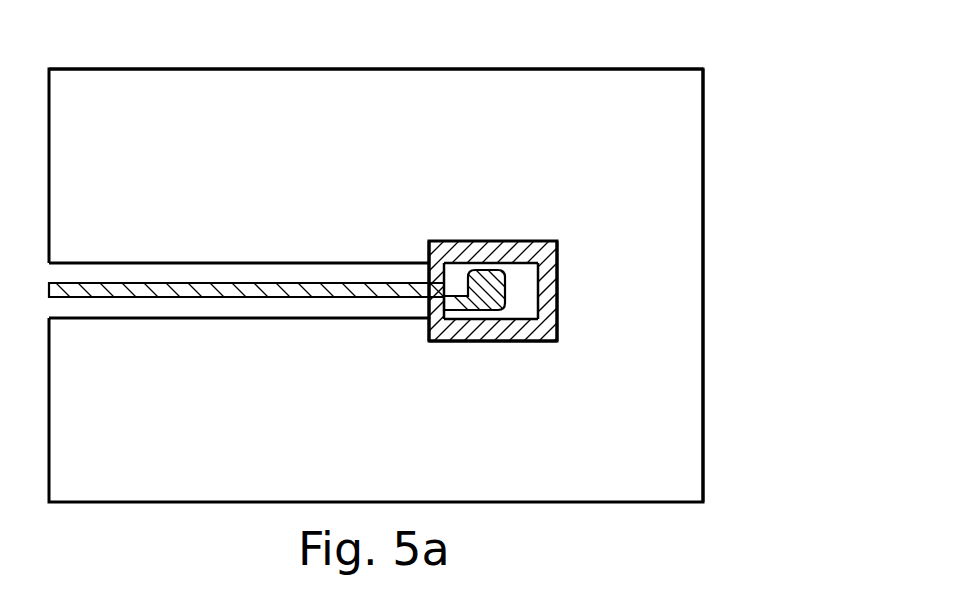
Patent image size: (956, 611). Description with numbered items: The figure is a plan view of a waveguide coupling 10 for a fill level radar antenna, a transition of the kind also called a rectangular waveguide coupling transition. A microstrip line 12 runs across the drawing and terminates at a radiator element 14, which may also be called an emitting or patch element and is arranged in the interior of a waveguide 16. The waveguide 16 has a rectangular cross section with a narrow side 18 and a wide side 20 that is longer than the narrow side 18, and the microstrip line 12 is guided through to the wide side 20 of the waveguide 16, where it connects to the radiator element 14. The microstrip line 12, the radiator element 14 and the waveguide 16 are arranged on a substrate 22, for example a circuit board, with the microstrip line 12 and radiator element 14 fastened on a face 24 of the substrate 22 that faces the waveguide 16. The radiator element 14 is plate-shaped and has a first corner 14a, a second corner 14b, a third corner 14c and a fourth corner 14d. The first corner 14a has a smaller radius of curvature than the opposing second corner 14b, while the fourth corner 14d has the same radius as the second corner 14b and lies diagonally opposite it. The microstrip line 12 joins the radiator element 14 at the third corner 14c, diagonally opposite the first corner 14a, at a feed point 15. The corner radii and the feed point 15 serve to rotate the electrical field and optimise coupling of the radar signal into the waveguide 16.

The waveguide coupling 10 is at (732, 91).
The microstrip line 12 is at (200, 282).
The radiator element 14 is at (478, 268).
The first corner 14a is at (513, 261).
The second corner 14b is at (497, 328).
The third corner 14c is at (462, 328).
The fourth corner 14d is at (438, 263).
The feed point 15 is at (424, 321).
The waveguide 16 is at (559, 235).
The narrow side 18 is at (558, 280).
The wide side 20 is at (557, 343).
The substrate 22 is at (712, 163).
The face 24 is at (670, 233).